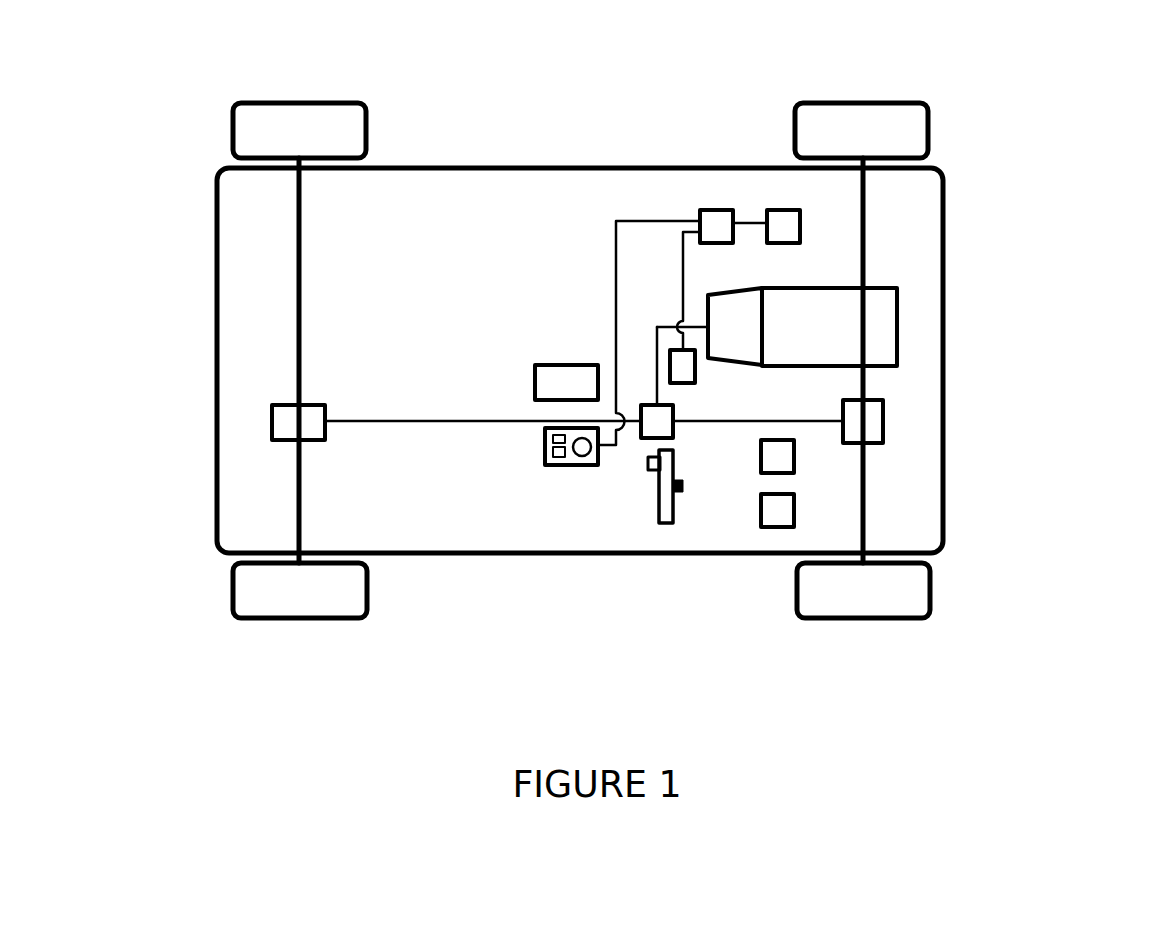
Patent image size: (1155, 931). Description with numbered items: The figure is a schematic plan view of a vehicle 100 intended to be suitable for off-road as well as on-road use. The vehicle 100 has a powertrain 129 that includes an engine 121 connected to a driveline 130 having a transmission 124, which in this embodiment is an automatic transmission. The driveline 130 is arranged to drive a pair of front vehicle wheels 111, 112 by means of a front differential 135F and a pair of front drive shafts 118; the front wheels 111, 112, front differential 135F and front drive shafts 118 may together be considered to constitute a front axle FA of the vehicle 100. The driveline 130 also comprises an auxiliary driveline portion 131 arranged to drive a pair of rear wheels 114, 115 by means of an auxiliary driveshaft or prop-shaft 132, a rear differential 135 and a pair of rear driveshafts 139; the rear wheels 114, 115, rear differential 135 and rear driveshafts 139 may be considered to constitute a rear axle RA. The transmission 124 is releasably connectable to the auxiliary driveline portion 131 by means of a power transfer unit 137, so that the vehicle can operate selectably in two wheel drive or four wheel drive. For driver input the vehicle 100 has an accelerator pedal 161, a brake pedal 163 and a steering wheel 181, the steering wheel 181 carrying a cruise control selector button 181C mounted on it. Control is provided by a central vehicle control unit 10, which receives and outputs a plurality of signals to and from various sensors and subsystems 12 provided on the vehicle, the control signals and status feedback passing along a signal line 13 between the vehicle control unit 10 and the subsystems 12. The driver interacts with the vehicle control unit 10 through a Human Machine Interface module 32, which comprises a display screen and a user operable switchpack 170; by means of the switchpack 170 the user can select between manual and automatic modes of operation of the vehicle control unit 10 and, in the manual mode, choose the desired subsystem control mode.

The vehicle 100 is at (1035, 128).
The front vehicle wheel 111 is at (910, 115).
The front vehicle wheel 112 is at (910, 607).
The rear wheel 114 is at (262, 113).
The rear wheel 115 is at (262, 607).
The front drive shafts 118 is at (863, 213).
The rear driveshafts 139 is at (298, 267).
The engine 121 is at (887, 315).
The transmission 124 is at (735, 307).
The powertrain 129 is at (1035, 360).
The driveline 130 is at (1037, 543).
The auxiliary driveline portion 131 is at (417, 587).
The prop-shaft 132 is at (458, 424).
The rear differential 135 is at (277, 422).
The front differential 135F is at (875, 430).
The power transfer unit 137 is at (648, 433).
The vehicle control unit 10 is at (707, 208).
The vehicle subsystems 12 is at (782, 208).
The signal line 13 is at (747, 222).
The Human Machine Interface module 32 is at (677, 355).
The accelerator pedal 161 is at (777, 520).
The brake pedal 163 is at (770, 458).
The switchpack 170 is at (568, 463).
The steering wheel 181 is at (667, 517).
The cruise control selector button 181C is at (653, 470).
The rear axle RA is at (277, 343).
The front axle FA is at (907, 532).